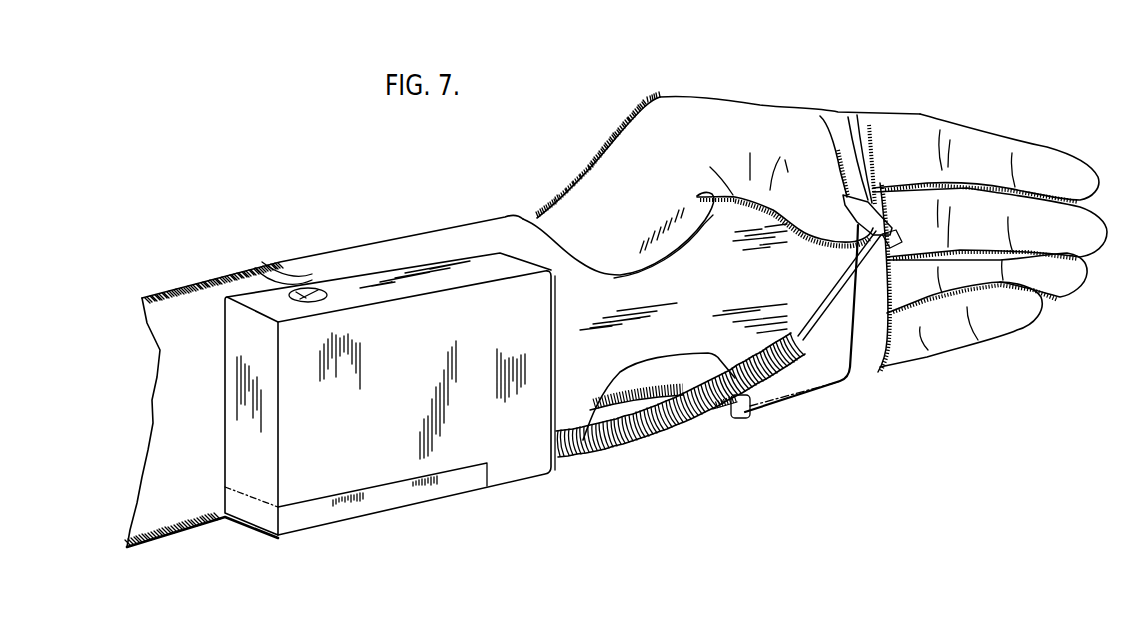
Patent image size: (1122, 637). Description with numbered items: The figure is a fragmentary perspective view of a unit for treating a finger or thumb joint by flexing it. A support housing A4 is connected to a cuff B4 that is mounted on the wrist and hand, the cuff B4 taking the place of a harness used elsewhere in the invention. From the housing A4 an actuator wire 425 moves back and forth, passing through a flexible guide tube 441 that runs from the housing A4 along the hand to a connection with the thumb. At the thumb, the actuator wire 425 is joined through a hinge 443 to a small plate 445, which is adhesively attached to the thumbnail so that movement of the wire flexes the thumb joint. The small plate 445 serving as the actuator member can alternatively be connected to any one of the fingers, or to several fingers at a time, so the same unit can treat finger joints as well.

The support housing A4 is at (483, 422).
The cuff B4 is at (637, 293).
The flexible guide tube 441 is at (690, 425).
The actuator wire 425 is at (828, 307).
The hinge 443 is at (899, 245).
The small plate 445 is at (852, 195).